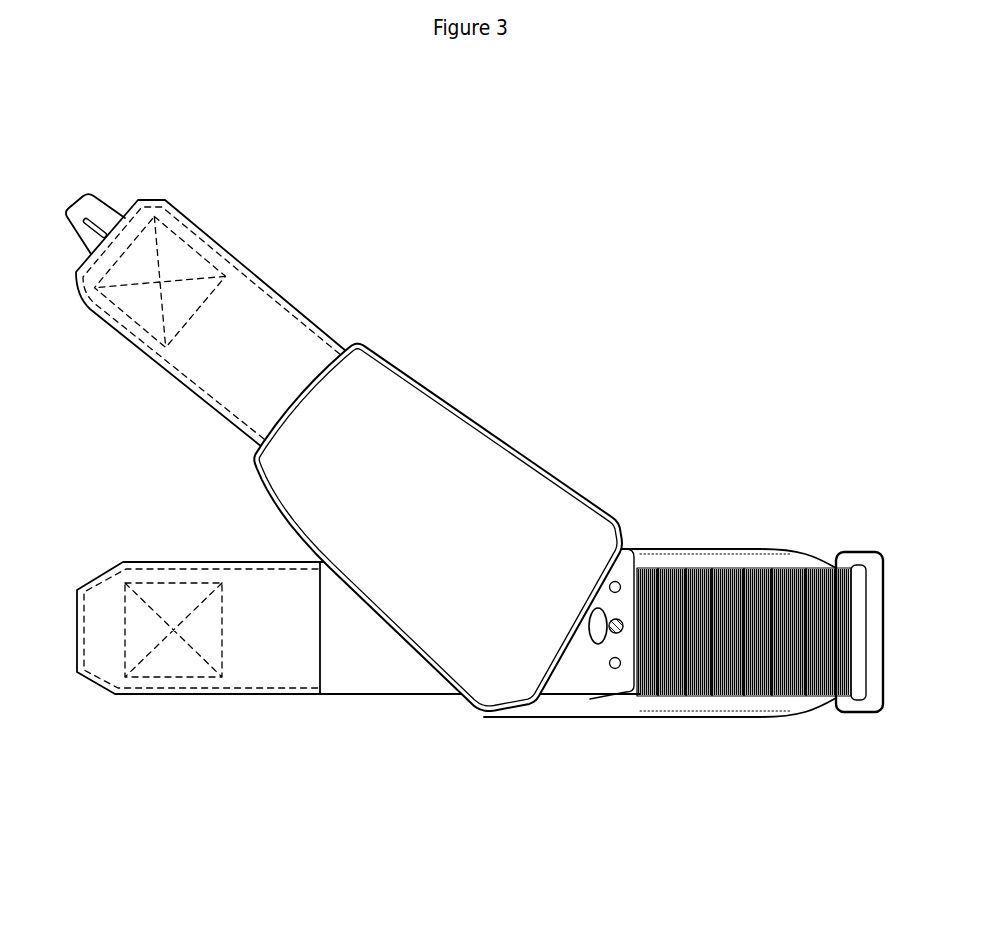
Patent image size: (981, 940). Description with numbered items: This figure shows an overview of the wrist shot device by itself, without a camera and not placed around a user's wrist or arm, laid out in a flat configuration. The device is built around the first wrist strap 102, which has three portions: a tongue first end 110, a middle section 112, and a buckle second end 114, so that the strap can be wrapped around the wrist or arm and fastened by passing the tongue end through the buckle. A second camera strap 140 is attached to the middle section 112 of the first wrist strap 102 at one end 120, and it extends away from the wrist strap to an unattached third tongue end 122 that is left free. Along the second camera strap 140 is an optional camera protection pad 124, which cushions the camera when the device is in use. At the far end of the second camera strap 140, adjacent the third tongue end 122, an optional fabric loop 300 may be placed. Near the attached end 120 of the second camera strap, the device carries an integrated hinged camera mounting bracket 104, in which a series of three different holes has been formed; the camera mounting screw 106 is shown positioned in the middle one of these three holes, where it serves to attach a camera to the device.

The first wrist strap 102 is at (338, 802).
The integrated hinged camera mounting bracket 104 is at (637, 560).
The camera mounting screw 106 is at (598, 653).
The tongue first end 110 is at (77, 686).
The middle section 112 is at (403, 708).
The buckle second end 114 is at (862, 723).
The attached end of the second camera strap 120 is at (557, 632).
The third tongue end 122 is at (163, 187).
The camera protection pad 124 is at (498, 422).
The second camera strap 140 is at (487, 258).
The fabric loop 300 is at (98, 183).